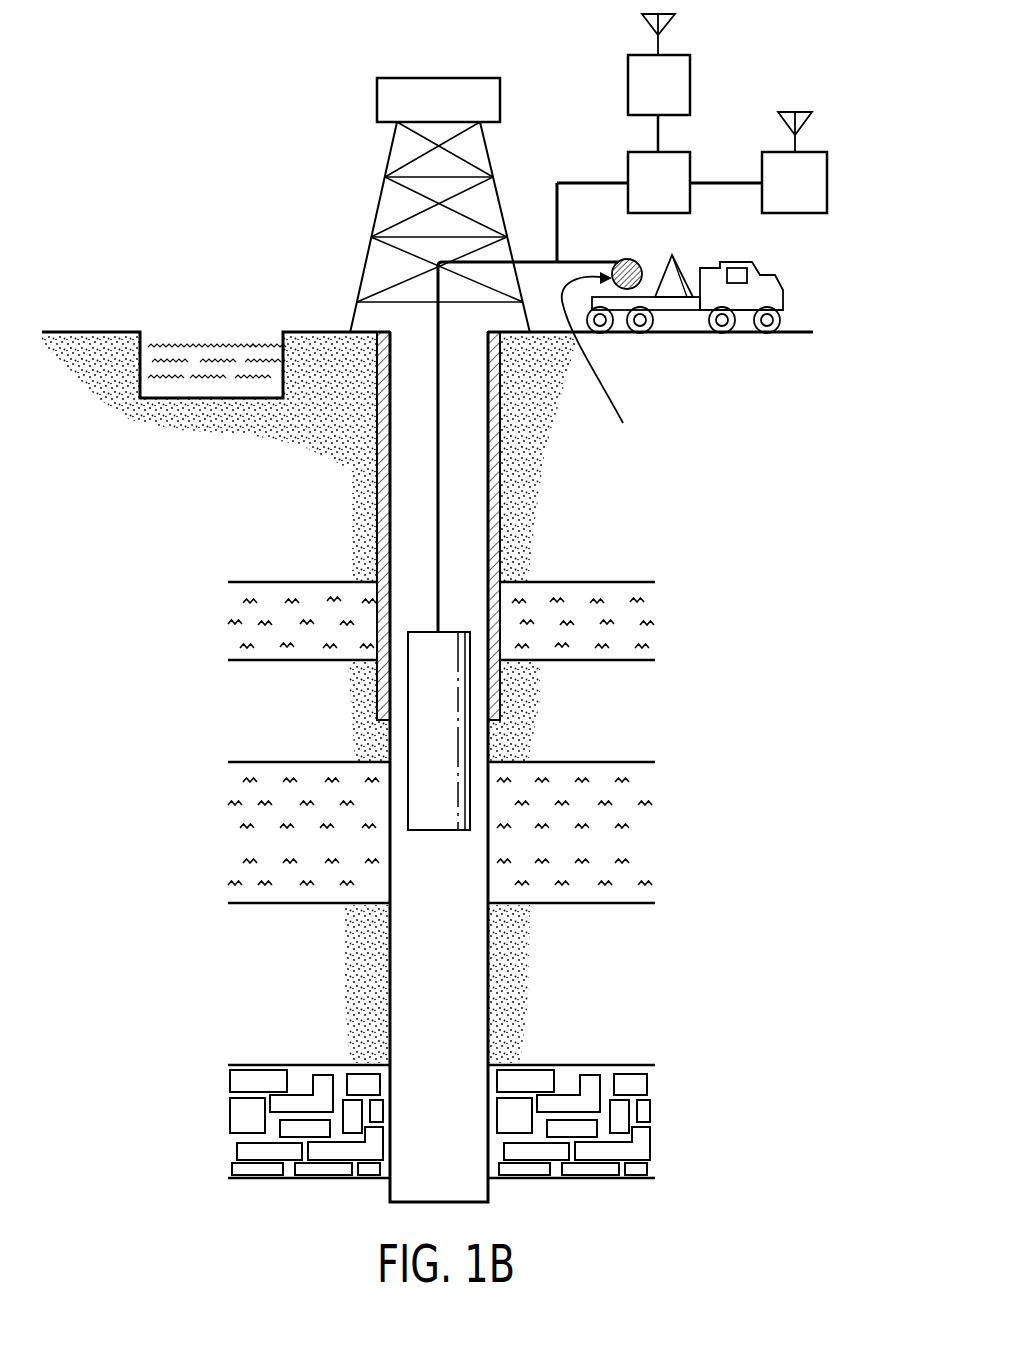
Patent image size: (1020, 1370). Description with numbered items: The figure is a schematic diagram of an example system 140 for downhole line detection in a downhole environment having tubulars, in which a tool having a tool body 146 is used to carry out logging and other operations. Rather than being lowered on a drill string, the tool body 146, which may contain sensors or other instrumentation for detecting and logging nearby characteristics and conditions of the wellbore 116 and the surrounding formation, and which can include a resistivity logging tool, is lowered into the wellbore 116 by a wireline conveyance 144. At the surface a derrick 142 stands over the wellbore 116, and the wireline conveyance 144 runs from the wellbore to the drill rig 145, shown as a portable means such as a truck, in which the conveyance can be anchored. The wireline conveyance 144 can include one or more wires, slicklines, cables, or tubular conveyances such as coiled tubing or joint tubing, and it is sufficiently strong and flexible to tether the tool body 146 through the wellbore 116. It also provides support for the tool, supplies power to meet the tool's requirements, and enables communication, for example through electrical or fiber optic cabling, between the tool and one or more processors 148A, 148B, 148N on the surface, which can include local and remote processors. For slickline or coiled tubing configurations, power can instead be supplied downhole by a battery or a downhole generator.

The system 140 is at (280, 120).
The wellbore 116 is at (485, 980).
The derrick / rig 142 is at (510, 130).
The wireline conveyance 144 is at (600, 260).
The drill rig 145 is at (672, 357).
The tool body 146 is at (424, 717).
The processor 148A is at (628, 60).
The processor 148B is at (688, 152).
The processor 148N is at (790, 215).